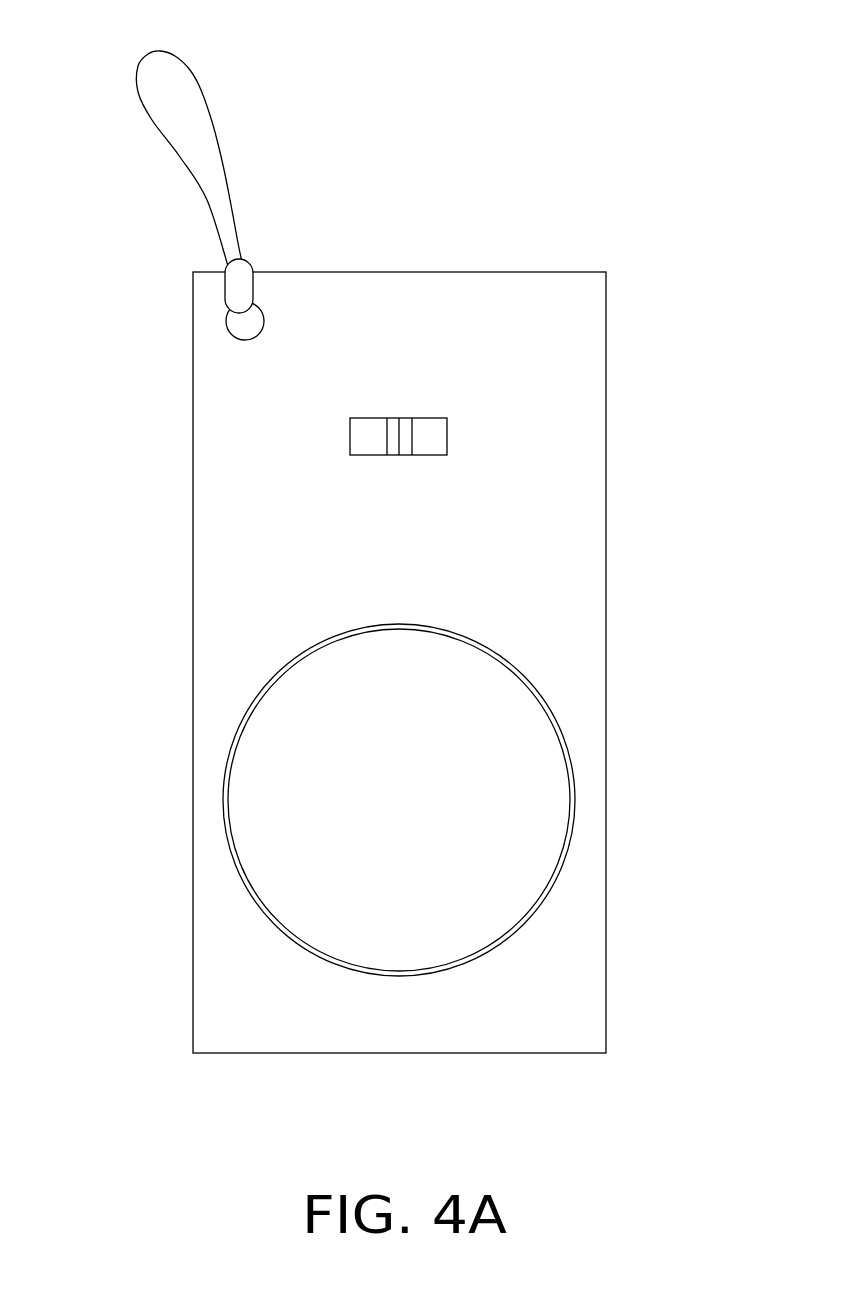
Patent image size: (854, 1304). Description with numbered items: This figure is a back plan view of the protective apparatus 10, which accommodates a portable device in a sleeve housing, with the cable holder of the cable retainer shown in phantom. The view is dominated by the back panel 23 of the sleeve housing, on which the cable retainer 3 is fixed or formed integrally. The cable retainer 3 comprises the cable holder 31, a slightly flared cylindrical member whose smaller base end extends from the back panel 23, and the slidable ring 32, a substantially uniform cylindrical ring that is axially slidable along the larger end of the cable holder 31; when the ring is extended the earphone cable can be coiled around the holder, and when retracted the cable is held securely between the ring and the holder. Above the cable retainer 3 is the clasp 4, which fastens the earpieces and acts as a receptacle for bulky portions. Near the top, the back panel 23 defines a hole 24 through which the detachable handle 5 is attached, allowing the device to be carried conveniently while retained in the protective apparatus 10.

The protective apparatus 10 is at (427, 35).
The back panel 23 is at (553, 505).
The hole 24 is at (238, 325).
The detachable handle 5 is at (240, 273).
The clasp 4 is at (433, 412).
The cable retainer 3 is at (492, 800).
The cable holder 31 is at (728, 710).
The slidable ring 32 is at (572, 762).